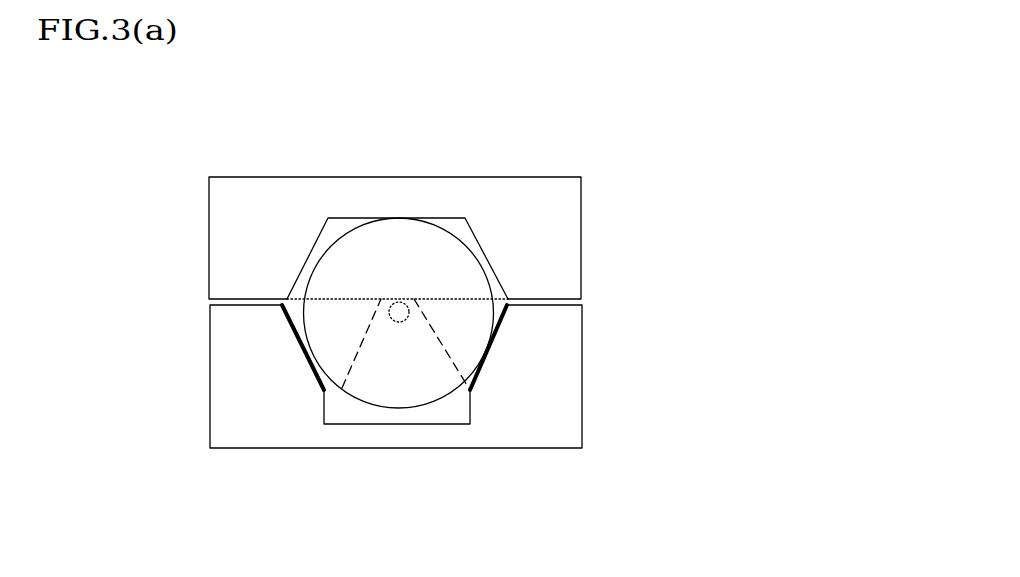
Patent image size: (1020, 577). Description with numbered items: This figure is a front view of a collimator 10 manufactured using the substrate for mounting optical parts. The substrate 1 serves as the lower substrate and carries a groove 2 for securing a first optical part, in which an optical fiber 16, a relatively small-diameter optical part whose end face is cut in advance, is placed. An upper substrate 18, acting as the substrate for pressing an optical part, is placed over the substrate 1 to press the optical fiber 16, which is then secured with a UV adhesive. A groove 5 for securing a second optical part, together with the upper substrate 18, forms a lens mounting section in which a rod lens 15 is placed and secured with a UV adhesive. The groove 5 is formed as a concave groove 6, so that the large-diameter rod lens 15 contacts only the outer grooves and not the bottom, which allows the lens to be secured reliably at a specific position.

The collimator 10 is at (552, 160).
The upper substrate 18 is at (572, 235).
The substrate for mounting optical parts 1 is at (567, 374).
The rod lens 15 is at (319, 328).
The groove for securing a second optical part 5 is at (302, 378).
The concave groove 6 is at (355, 422).
The groove for securing a first optical part 2 is at (408, 322).
The optical fiber 16 is at (399, 318).